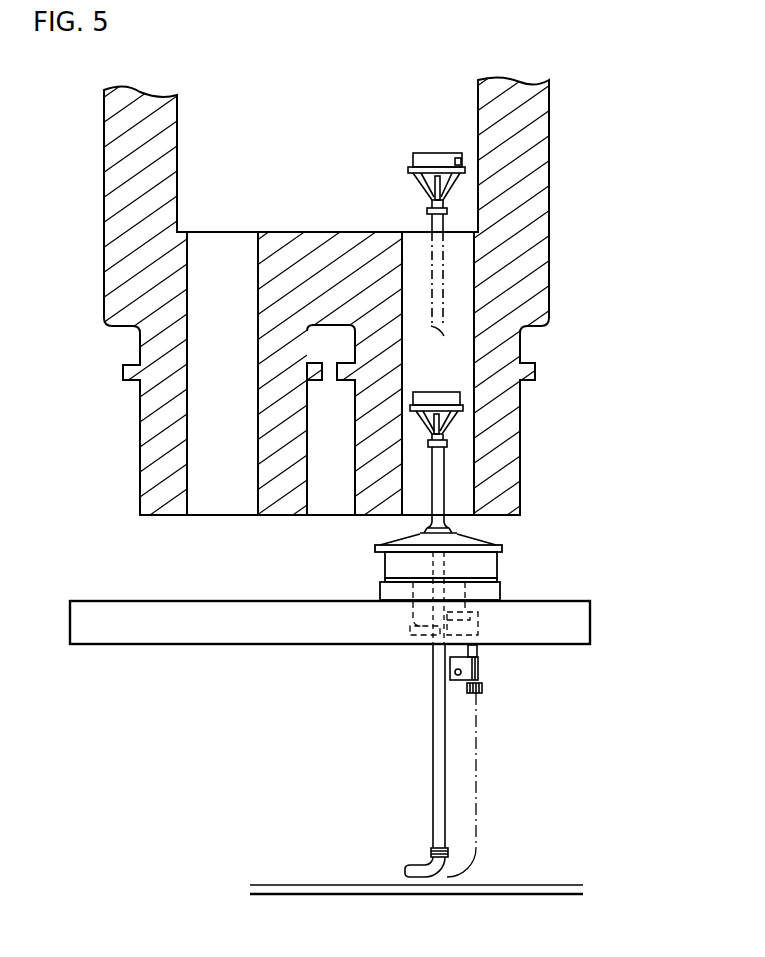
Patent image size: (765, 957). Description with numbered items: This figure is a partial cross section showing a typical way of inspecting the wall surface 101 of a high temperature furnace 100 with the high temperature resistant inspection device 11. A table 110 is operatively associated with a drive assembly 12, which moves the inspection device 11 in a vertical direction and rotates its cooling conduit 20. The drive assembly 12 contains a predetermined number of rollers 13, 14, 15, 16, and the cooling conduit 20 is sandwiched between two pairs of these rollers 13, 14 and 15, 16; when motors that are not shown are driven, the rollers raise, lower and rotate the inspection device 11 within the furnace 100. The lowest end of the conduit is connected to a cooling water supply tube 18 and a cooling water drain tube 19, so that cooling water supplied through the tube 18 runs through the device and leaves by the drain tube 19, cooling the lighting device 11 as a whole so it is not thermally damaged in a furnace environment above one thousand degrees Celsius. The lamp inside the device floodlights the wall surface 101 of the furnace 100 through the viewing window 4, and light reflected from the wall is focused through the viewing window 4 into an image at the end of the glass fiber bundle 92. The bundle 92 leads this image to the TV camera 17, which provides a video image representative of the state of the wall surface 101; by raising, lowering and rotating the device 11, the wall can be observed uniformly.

The high temperature furnace 100 is at (618, 106).
The wall surface 101 is at (480, 197).
The high temperature resistant inspection device 11 is at (410, 145).
The viewing window 4 is at (459, 157).
The cooling conduit 20 is at (441, 478).
The drive assembly 12 is at (514, 553).
The roller 13 is at (431, 556).
The roller 14 is at (452, 557).
The table 110 is at (243, 637).
The roller 15 is at (421, 639).
The roller 16 is at (470, 615).
The TV camera 17 is at (480, 671).
The glass fiber bundle 92 is at (478, 781).
The cooling water supply tube 18 is at (425, 868).
The cooling water drain tube 19 is at (432, 886).